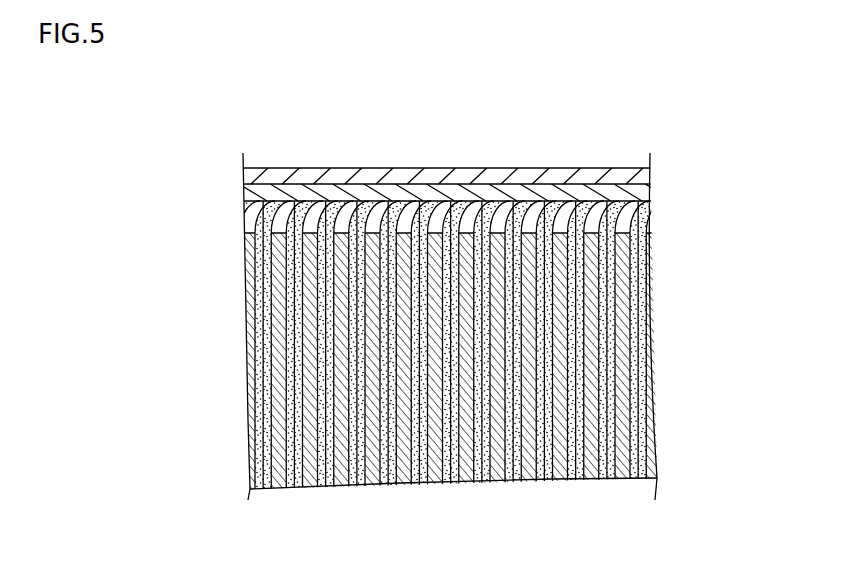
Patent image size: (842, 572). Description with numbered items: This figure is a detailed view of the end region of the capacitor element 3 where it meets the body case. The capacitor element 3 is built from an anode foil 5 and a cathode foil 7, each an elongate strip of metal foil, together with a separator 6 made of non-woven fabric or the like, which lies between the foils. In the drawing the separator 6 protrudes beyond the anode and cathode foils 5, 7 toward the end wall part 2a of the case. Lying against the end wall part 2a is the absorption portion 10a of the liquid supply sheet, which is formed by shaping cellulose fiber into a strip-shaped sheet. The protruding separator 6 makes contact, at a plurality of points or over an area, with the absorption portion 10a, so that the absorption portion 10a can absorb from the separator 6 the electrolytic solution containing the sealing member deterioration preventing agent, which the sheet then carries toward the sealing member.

The capacitor element 3 is at (672, 268).
The cathode foil 7 is at (433, 220).
The separator 6 is at (409, 232).
The anode foil 5 is at (402, 227).
The absorption portion 10a is at (562, 182).
The end wall part 2a is at (606, 172).